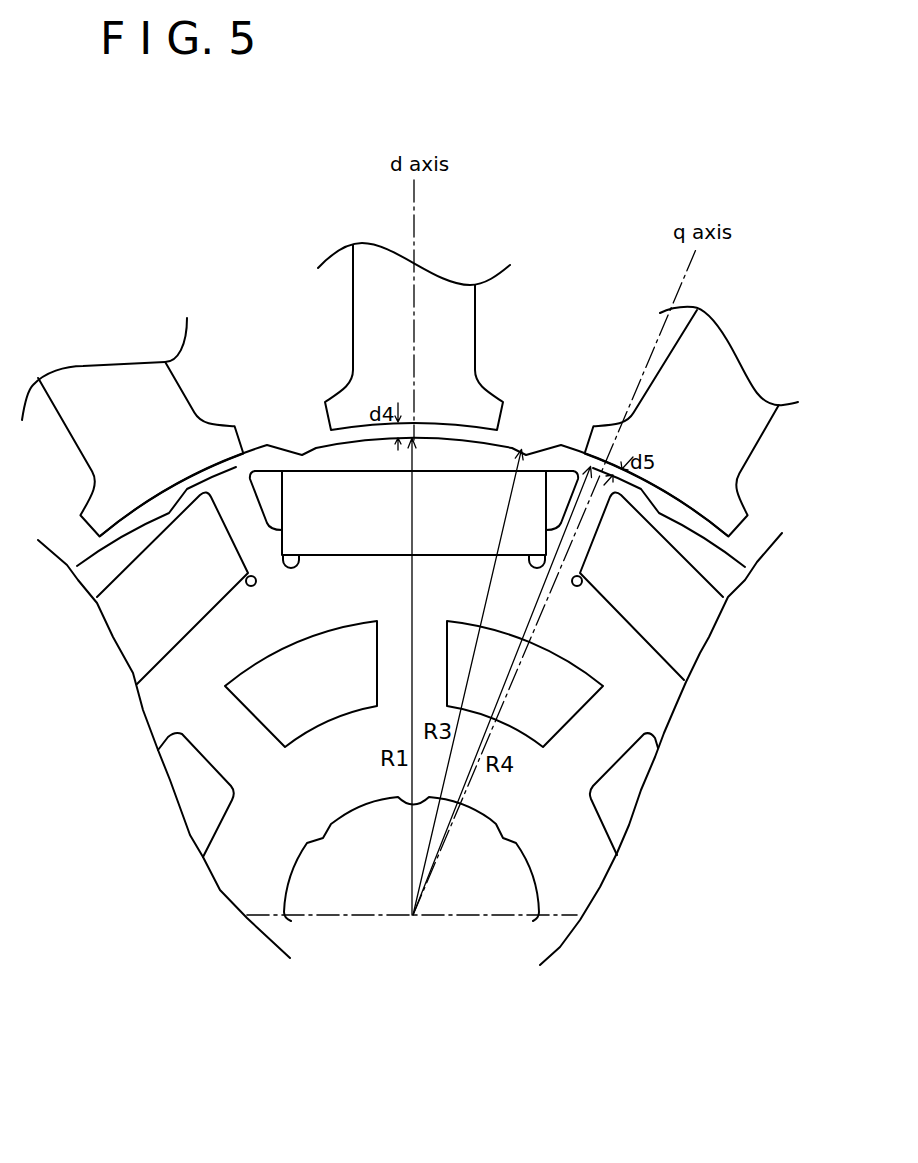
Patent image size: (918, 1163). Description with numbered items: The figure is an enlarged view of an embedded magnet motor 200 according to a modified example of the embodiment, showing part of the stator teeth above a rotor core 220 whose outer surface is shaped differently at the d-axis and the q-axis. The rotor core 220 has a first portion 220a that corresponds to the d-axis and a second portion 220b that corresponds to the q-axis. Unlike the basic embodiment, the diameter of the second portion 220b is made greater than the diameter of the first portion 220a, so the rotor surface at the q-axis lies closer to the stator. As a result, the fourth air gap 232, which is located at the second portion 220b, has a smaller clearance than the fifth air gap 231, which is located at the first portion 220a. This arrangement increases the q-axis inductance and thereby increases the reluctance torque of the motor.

The embedded magnet motor 200 is at (237, 282).
The rotor core 220 is at (162, 703).
The first portion 220a is at (368, 460).
The second portion 220b is at (592, 445).
The fifth air gap 231 is at (501, 434).
The fourth air gap 232 is at (411, 496).